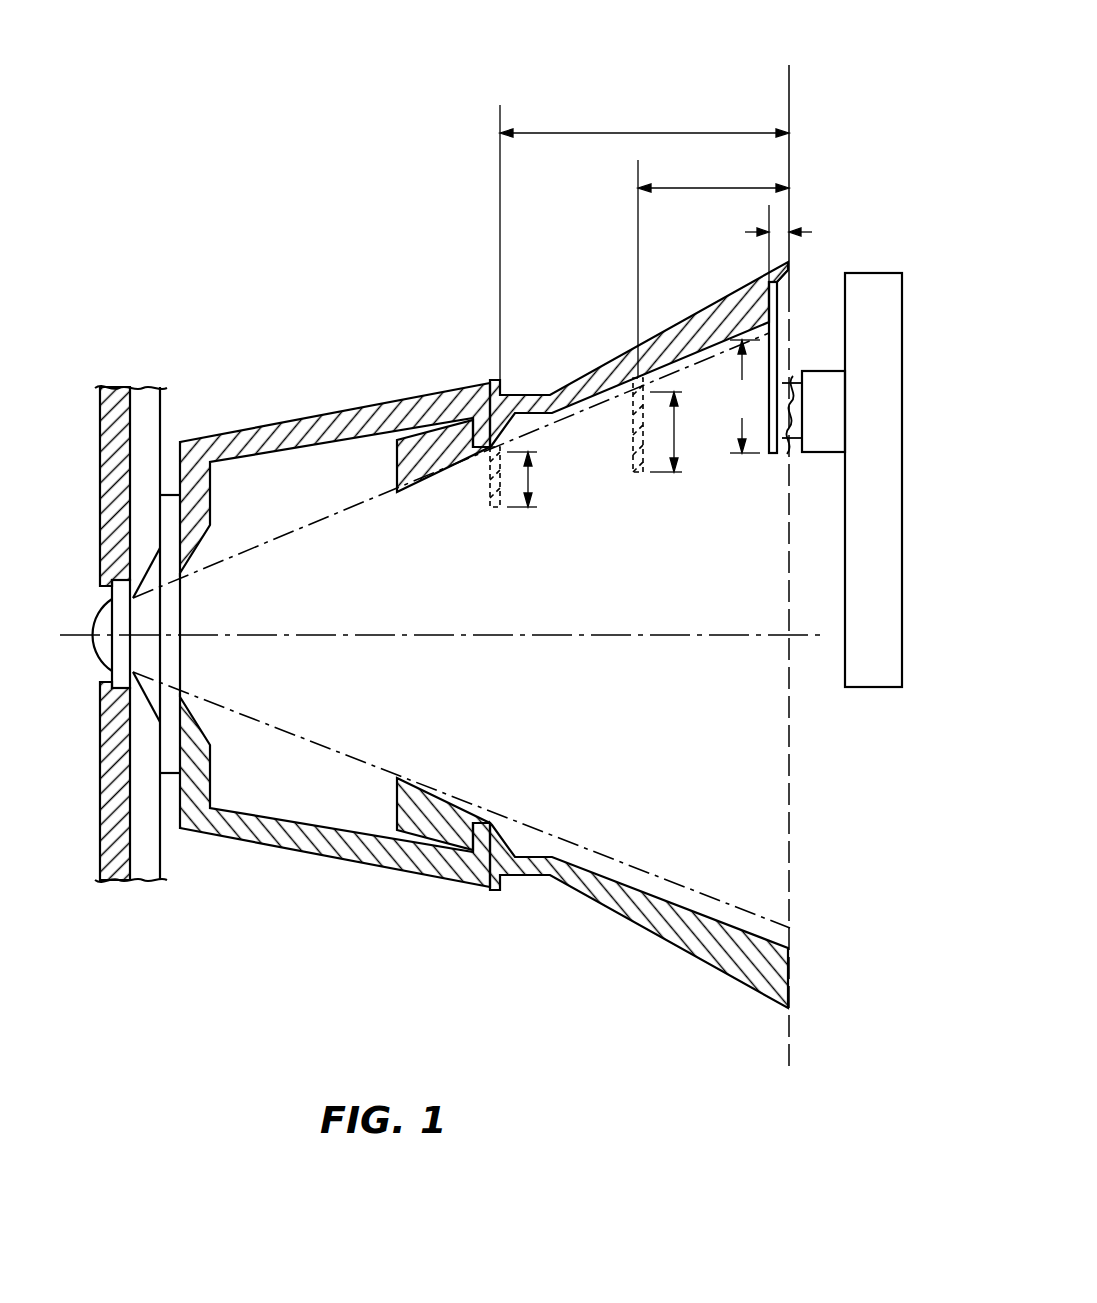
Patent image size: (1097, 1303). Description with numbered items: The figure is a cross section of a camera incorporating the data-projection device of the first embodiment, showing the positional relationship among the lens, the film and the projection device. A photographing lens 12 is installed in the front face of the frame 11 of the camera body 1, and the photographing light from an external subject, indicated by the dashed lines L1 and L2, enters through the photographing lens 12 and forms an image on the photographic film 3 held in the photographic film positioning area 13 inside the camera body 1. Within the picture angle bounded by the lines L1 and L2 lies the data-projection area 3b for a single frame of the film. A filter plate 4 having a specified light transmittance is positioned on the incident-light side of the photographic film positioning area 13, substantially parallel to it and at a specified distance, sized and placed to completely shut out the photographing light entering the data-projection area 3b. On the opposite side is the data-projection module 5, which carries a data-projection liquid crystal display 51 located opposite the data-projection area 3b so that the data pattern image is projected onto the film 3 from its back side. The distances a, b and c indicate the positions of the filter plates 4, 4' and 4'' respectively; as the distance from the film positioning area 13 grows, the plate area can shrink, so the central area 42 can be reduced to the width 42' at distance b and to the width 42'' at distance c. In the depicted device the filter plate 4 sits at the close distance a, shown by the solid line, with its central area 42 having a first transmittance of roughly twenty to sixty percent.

The camera body 1 is at (309, 364).
The frame 11 is at (408, 398).
The photographing lens 12 is at (93, 615).
The photographic film positioning area 13 is at (787, 98).
The photographic film 3 is at (792, 752).
The data-projection area 3b is at (783, 455).
The filter plate 4 is at (742, 390).
The filter plate at distance b 4' is at (620, 451).
The filter plate at distance c 4'' is at (462, 499).
The central area 42 is at (738, 396).
The reduced central area width at distance b 42' is at (689, 432).
The reduced central area width at distance c 42'' is at (550, 479).
The data-projection module 5 is at (858, 532).
The data-projection liquid crystal display 51 is at (808, 372).
The photographing light line L1 is at (313, 508).
The photographing light line L2 is at (243, 712).
The distance a is at (768, 236).
The distance b is at (704, 185).
The distance c is at (600, 129).